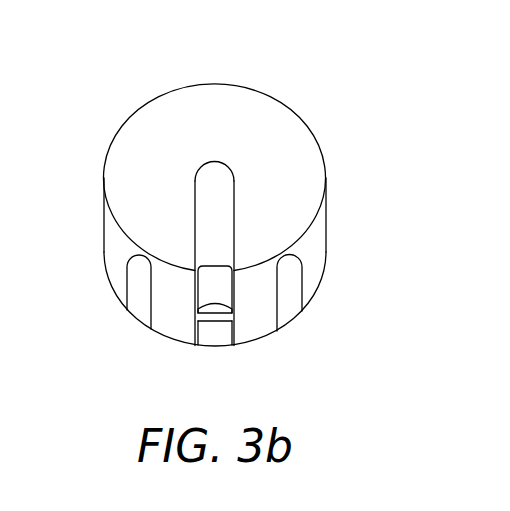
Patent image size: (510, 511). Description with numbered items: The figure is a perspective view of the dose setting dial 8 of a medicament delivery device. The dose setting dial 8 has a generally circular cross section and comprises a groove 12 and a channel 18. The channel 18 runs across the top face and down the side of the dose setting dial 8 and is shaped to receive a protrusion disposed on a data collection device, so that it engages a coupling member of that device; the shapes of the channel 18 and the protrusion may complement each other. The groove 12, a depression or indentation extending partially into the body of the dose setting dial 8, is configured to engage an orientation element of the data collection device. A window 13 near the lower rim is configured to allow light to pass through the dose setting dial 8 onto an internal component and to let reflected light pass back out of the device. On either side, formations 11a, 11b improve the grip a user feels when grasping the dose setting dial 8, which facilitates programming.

The dose setting dial 8 is at (333, 116).
The channel 18 is at (207, 199).
The groove 12 is at (223, 287).
The window 13 is at (213, 342).
The formation 11a is at (140, 313).
The formation 11b is at (288, 313).